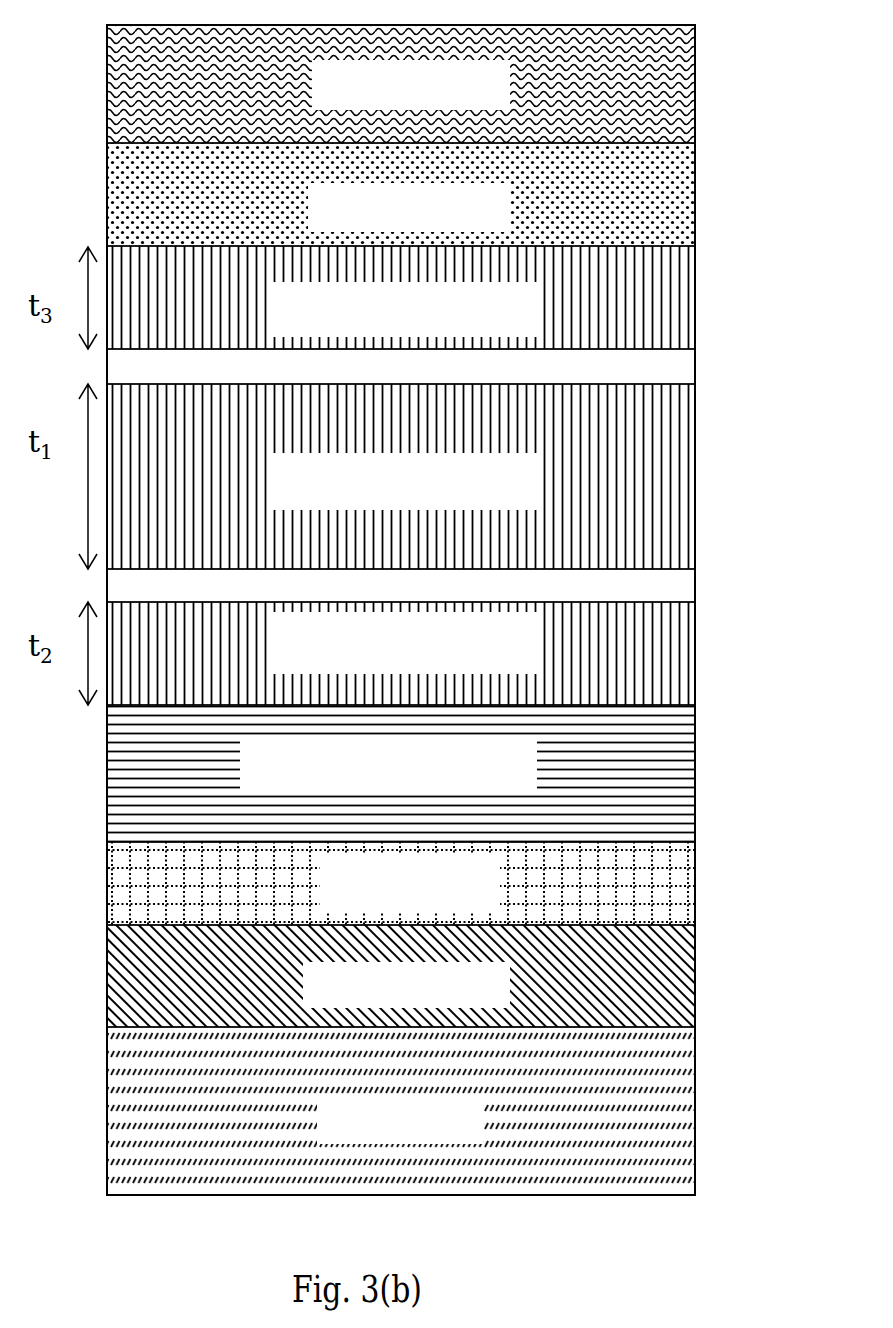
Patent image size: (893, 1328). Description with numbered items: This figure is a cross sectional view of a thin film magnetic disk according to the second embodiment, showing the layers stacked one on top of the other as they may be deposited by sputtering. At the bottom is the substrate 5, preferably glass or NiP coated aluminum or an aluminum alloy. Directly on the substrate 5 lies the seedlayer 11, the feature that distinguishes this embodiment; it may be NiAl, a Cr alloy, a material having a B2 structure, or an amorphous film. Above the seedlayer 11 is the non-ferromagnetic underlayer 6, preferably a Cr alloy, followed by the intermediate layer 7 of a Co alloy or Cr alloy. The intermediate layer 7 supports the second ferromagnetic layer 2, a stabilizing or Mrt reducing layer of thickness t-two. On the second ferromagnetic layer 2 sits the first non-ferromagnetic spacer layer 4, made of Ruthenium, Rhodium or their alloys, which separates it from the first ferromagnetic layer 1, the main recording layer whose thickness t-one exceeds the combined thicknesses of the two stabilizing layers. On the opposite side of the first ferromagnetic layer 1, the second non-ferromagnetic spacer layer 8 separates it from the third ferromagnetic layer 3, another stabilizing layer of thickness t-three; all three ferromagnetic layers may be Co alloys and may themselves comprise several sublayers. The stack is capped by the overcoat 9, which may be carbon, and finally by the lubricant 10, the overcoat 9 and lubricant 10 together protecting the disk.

The lubricant 10 is at (668, 93).
The overcoat 9 is at (665, 198).
The third ferromagnetic layer 3 is at (665, 300).
The second non-ferromagnetic spacer layer 8 is at (663, 369).
The first ferromagnetic layer 1 is at (663, 470).
The first non-ferromagnetic spacer layer 4 is at (662, 588).
The second ferromagnetic layer 2 is at (645, 638).
The intermediate layer 7 is at (627, 780).
The underlayer 6 is at (623, 892).
The seedlayer 11 is at (623, 978).
The substrate 5 is at (608, 1103).